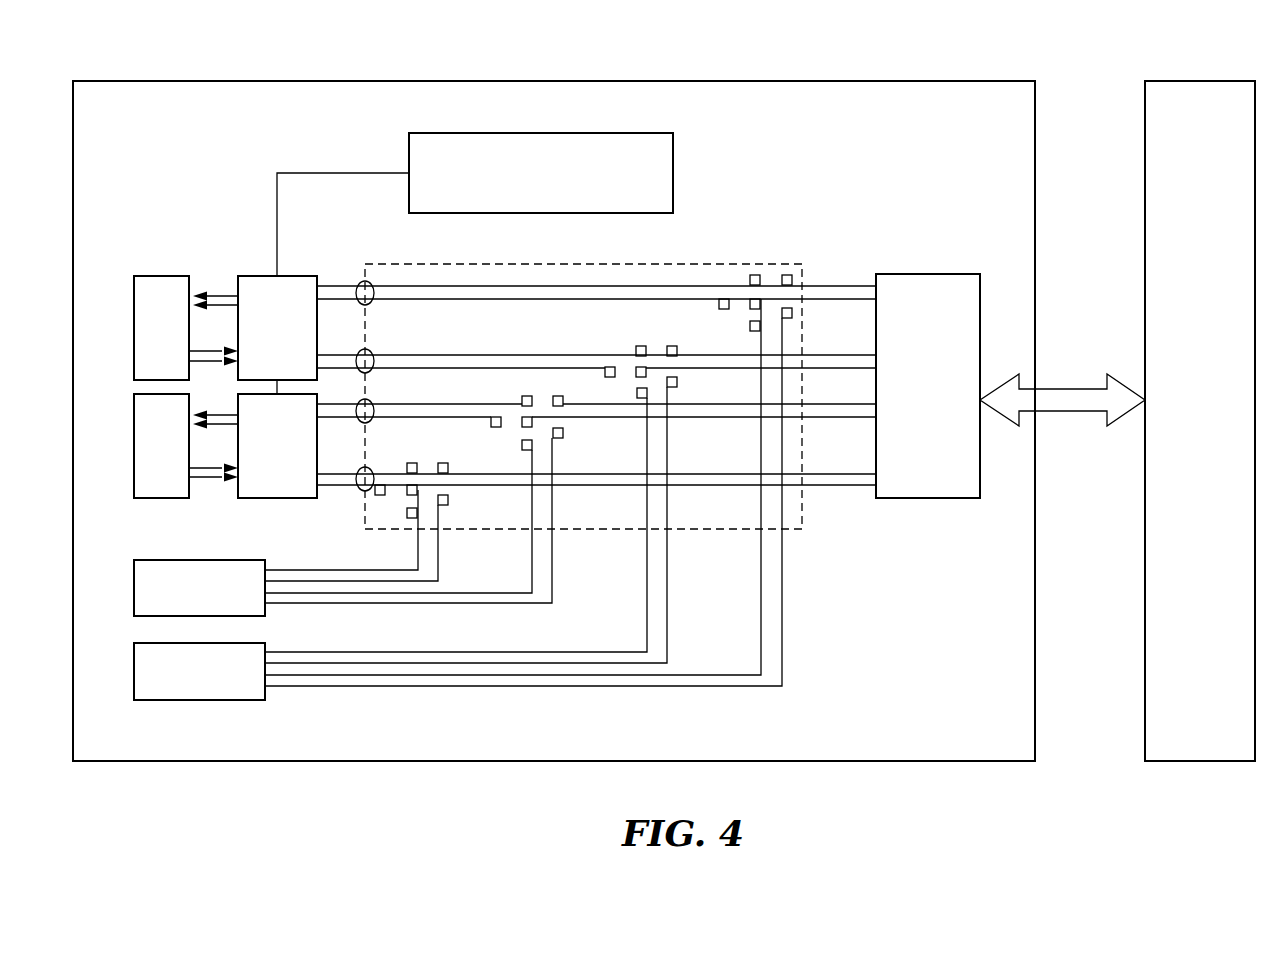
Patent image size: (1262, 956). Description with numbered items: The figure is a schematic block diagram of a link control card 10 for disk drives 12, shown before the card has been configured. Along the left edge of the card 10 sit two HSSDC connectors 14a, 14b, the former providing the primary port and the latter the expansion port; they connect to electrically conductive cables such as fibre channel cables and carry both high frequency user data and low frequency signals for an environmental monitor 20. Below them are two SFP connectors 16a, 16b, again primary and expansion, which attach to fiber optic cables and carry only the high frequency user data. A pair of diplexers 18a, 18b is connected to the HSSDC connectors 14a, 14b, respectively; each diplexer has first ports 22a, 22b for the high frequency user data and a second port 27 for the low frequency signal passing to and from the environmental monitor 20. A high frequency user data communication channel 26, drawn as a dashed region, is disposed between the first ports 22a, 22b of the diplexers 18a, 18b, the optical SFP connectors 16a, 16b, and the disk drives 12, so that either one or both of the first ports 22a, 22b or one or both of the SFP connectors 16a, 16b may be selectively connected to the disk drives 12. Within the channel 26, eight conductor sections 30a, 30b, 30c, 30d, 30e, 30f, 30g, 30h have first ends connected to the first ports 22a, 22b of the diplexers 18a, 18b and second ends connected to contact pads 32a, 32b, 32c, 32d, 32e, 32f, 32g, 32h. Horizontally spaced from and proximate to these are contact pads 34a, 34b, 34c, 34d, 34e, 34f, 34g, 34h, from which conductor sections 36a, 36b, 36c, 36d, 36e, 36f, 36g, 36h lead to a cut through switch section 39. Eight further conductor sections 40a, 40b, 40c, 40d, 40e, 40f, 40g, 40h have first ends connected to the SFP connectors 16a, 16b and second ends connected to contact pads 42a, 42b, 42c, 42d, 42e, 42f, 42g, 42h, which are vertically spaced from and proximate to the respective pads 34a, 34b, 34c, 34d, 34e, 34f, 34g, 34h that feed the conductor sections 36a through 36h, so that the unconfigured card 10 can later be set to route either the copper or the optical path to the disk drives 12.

The link control card (LCC) 10 is at (932, 81).
The disk drives 12 is at (1186, 81).
The HSSDC2 connector (primary port) 14a is at (134, 328).
The HSSDC2 connector (expansion port) 14b is at (134, 447).
The SFP connector (primary port) 16a is at (134, 672).
The SFP connector (expansion port) 16b is at (134, 588).
The diplexer 18a is at (297, 276).
The diplexer 18b is at (274, 498).
The environmental monitor 20 is at (675, 173).
The first port 22a is at (373, 301).
The first port 22b is at (374, 355).
The high frequency user data communication channel 26 is at (696, 530).
The second port 27 is at (276, 272).
The conductor section 30a is at (498, 286).
The conductor section 30b is at (466, 300).
The conductor section 30c is at (504, 355).
The conductor section 30d is at (484, 368).
The conductor section 30e is at (427, 404).
The conductor section 30f is at (322, 418).
The conductor section 30g is at (322, 474).
The conductor section 30h is at (337, 487).
The contact pad 32a is at (760, 277).
The contact pad 32b is at (719, 302).
The contact pad 32c is at (638, 346).
The contact pad 32d is at (605, 372).
The contact pad 32e is at (532, 399).
The contact pad 32f is at (492, 424).
The contact pad 32g is at (412, 462).
The contact pad 32h is at (378, 497).
The contact pad 34a is at (793, 280).
The contact pad 34b is at (750, 302).
The contact pad 34c is at (672, 346).
The contact pad 34d is at (677, 376).
The contact pad 34e is at (558, 396).
The contact pad 34f is at (563, 430).
The contact pad 34g is at (444, 463).
The contact pad 34h is at (413, 496).
The conductor section 36a is at (850, 286).
The conductor section 36b is at (867, 299).
The conductor section 36c is at (856, 355).
The conductor section 36d is at (855, 368).
The conductor section 36e is at (823, 404).
The conductor section 36f is at (855, 417).
The conductor section 36g is at (864, 474).
The conductor section 36h is at (817, 485).
The cut through switch section 39 is at (910, 274).
The conductor section 40a is at (782, 653).
The conductor section 40b is at (760, 653).
The conductor section 40c is at (668, 611).
The conductor section 40d is at (646, 608).
The conductor section 40e is at (553, 567).
The conductor section 40f is at (531, 567).
The conductor section 40g is at (439, 541).
The conductor section 40h is at (282, 568).
The contact pad 42a is at (793, 313).
The contact pad 42b is at (749, 326).
The contact pad 42c is at (669, 400).
The contact pad 42d is at (637, 394).
The contact pad 42e is at (574, 450).
The contact pad 42f is at (522, 446).
The contact pad 42g is at (449, 504).
The contact pad 42h is at (413, 519).